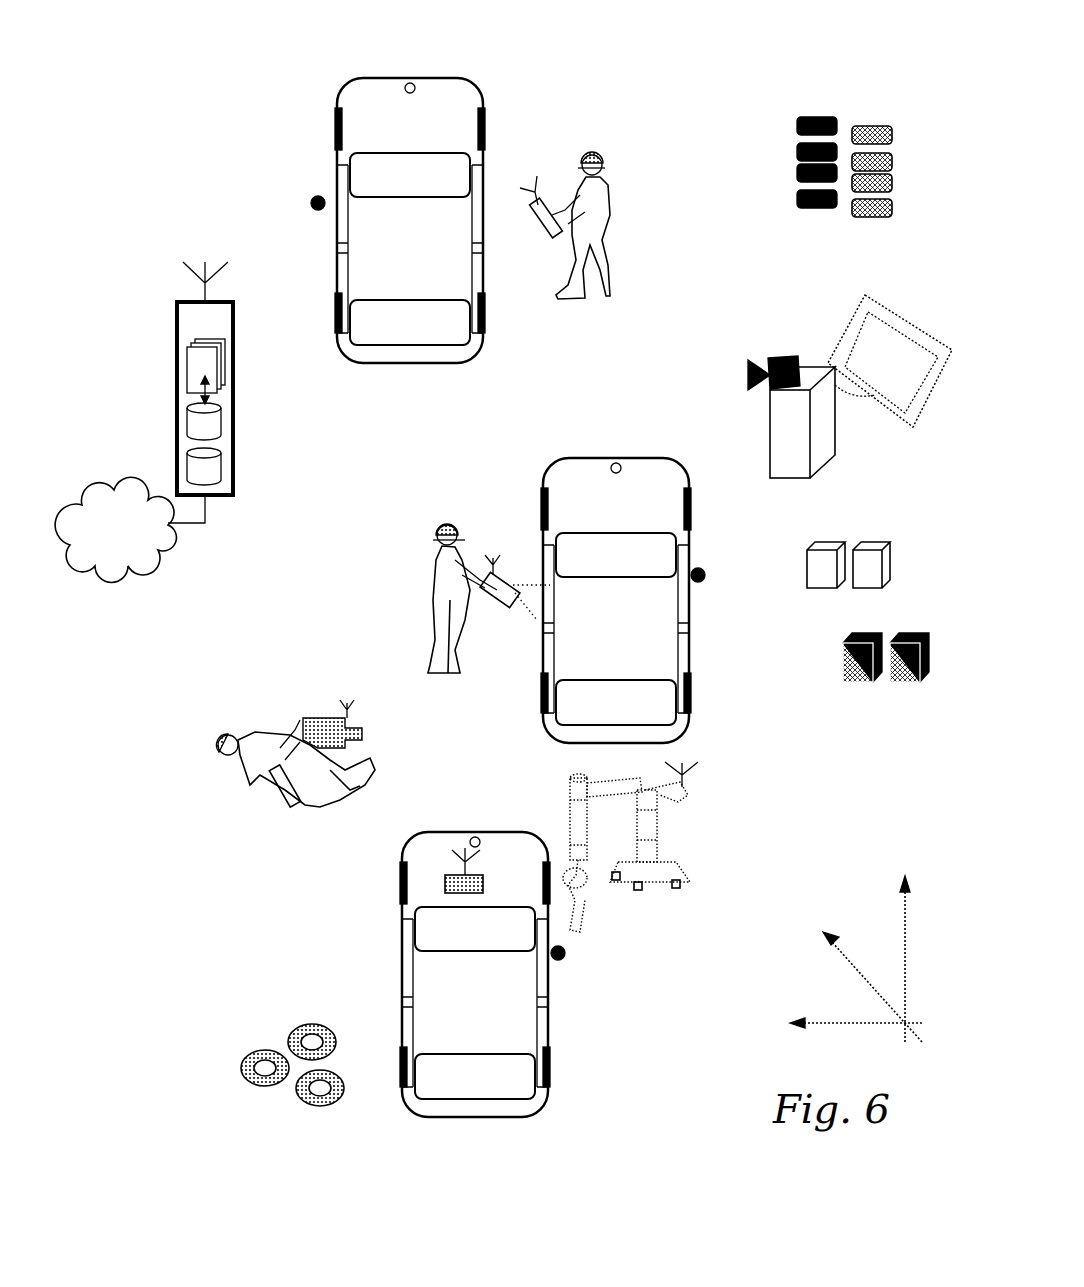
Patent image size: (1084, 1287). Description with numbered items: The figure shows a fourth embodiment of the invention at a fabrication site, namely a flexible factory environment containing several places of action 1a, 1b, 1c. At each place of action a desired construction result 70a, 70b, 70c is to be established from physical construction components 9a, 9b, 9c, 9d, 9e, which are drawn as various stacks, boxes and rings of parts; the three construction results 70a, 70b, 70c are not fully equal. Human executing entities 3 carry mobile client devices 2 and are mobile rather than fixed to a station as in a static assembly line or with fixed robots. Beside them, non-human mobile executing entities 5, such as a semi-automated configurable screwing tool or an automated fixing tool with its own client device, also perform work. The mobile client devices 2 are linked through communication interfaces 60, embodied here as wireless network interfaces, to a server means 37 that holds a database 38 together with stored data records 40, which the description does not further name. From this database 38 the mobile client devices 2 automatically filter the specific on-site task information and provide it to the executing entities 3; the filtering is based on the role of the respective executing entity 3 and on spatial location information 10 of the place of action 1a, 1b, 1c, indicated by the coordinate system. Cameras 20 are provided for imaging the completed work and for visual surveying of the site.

The place of action 1a is at (318, 203).
The place of action 1b is at (698, 575).
The place of action 1c is at (558, 953).
The mobile client device 2 is at (547, 207).
The executing entity 3 is at (600, 183).
The non-human mobile executing entity 5 is at (322, 713).
The physical construction component 9a is at (812, 117).
The physical construction component 9b is at (872, 125).
The physical construction component 9c is at (852, 545).
The physical construction component 9d is at (880, 677).
The physical construction component 9e is at (287, 1085).
The spatial location information 10 is at (900, 1020).
The camera 20 is at (780, 368).
The server means 37 is at (188, 312).
The database 38 is at (205, 470).
The data records 40 is at (198, 360).
The communication interface 60 is at (192, 277).
The desired construction result 70a is at (355, 115).
The desired construction result 70b is at (613, 482).
The desired construction result 70c is at (428, 1028).